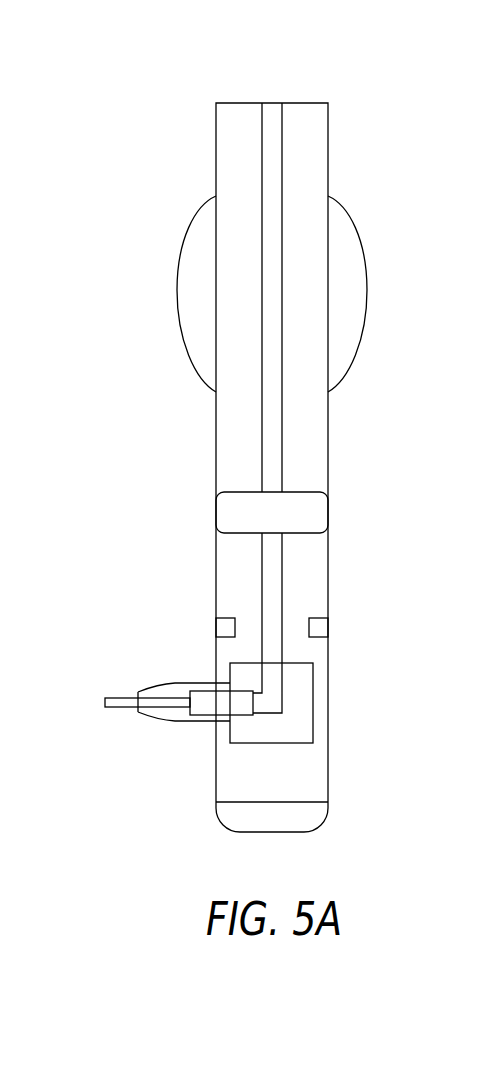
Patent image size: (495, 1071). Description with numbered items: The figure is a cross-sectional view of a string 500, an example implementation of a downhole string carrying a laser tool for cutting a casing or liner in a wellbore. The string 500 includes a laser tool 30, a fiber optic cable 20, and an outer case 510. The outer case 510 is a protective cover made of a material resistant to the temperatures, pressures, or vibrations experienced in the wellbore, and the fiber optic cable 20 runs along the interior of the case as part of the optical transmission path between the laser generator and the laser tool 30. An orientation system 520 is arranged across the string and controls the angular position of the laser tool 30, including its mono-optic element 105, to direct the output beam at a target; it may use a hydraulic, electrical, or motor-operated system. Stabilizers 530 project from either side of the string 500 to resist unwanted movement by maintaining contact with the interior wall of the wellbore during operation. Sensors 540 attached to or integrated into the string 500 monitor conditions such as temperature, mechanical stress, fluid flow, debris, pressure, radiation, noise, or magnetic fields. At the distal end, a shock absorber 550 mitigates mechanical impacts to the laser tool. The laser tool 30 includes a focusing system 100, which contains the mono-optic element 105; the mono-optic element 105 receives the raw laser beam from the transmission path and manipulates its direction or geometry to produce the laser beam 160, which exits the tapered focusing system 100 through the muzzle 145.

The string 500 is at (248, 452).
The outer case 510 is at (328, 453).
The fiber optic cable 20 is at (282, 207).
The stabilizers 530 is at (177, 309).
The orientation system 520 is at (313, 515).
The sensors 540 is at (220, 628).
The shock absorber 550 is at (328, 822).
The focusing system 100 is at (225, 672).
The laser tool 30 is at (345, 698).
The mono-optic element 105 is at (233, 708).
The muzzle 145 is at (138, 694).
The laser beam 160 is at (102, 710).